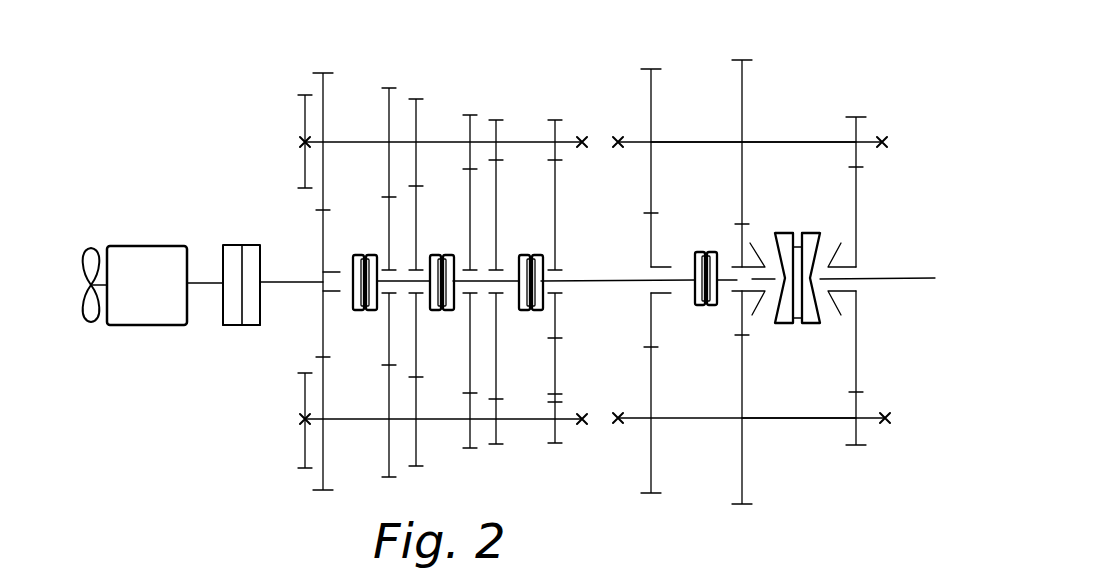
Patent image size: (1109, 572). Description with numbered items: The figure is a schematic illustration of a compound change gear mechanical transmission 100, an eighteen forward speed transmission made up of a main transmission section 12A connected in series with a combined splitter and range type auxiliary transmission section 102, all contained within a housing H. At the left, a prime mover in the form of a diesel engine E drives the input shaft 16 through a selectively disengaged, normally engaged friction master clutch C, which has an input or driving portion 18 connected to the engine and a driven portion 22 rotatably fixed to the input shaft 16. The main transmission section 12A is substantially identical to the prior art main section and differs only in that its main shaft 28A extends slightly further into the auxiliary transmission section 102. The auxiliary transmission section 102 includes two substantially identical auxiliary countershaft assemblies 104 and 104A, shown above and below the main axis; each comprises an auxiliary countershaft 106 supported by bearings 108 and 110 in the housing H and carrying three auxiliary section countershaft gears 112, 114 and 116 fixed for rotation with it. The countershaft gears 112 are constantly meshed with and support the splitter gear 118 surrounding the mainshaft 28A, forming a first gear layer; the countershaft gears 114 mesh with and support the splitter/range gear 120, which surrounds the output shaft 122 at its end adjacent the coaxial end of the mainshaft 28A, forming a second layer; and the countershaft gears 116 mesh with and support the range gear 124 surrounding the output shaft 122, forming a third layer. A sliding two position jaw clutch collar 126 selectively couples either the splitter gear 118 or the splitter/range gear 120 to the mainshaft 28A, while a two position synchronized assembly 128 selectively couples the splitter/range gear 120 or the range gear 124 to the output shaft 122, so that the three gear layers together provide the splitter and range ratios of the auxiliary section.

The diesel engine E is at (147, 285).
The friction master clutch C is at (239, 241).
The housing H is at (305, 118).
The input shaft 16 is at (300, 282).
The driving portion 18 is at (237, 326).
The driven portion 22 is at (251, 326).
The main transmission section 12A is at (440, 101).
The compound change gear mechanical transmission 100 is at (530, 95).
The bearing 108 is at (616, 141).
The auxiliary countershaft 106 is at (686, 140).
The auxiliary section countershaft gear 112 is at (651, 90).
The auxiliary section splitter gear 118 is at (650, 235).
The auxiliary section countershaft gear 114 is at (742, 88).
The auxiliary section splitter/range gear 120 is at (740, 242).
The auxiliary countershaft assembly 104 is at (789, 136).
The auxiliary transmission section 102 is at (816, 96).
The auxiliary section countershaft gear 116 is at (856, 130).
The auxiliary section range gear 124 is at (857, 217).
The bearing 110 is at (885, 140).
The two position synchronized assembly 128 is at (784, 229).
The output shaft 122 is at (892, 279).
The main shaft 28A is at (608, 282).
The sliding two position jaw clutch collar 126 is at (712, 306).
The auxiliary countershaft assembly 104A is at (759, 433).